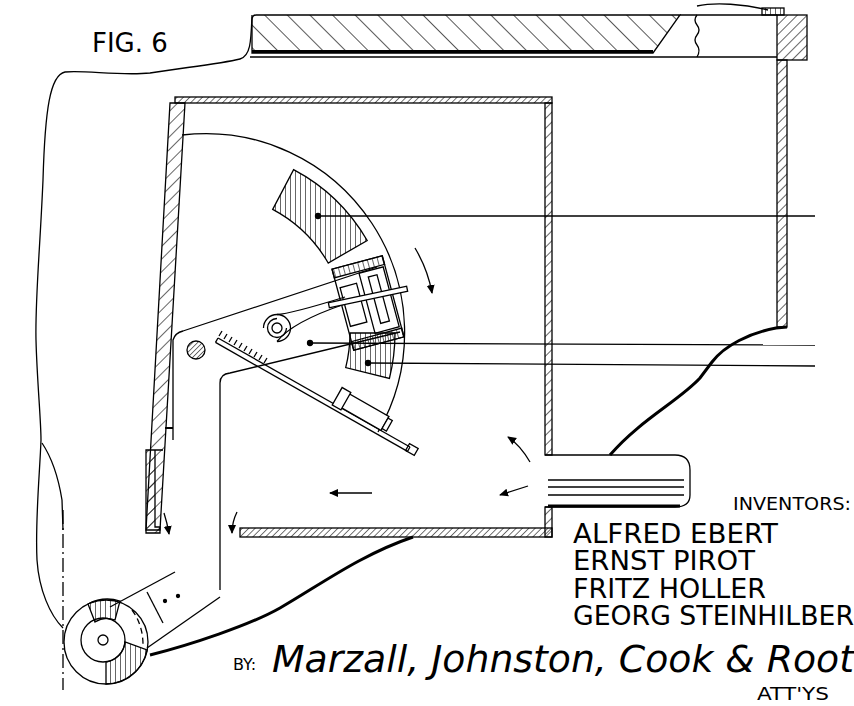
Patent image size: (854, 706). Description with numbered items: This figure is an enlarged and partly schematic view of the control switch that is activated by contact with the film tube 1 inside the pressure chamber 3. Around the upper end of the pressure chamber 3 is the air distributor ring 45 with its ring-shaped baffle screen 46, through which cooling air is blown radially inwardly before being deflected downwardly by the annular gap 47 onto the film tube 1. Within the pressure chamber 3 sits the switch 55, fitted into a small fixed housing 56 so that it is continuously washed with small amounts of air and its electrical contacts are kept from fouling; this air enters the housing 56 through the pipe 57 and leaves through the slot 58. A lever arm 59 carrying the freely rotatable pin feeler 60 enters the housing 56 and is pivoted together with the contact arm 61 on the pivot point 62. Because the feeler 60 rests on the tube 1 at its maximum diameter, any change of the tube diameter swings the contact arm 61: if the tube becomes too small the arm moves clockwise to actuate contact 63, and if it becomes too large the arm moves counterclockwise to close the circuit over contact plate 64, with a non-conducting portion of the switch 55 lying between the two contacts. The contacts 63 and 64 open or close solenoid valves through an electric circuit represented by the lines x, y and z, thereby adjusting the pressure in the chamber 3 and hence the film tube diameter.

The film tube 1 is at (55, 467).
The pressure chamber 3 is at (88, 198).
The air distributor ring 45 is at (739, 46).
The ring-shaped baffle screen 46 is at (697, 55).
The annular gap 47 is at (680, 44).
The switch 55 is at (266, 160).
The housing 56 is at (452, 537).
The pipe 57 is at (643, 462).
The slot 58 is at (232, 536).
The lever arm 59 is at (182, 477).
The pin feeler 60 is at (82, 607).
The contact arm 61 is at (293, 302).
The pivot point 62 is at (195, 341).
The electrical contact 63 is at (380, 352).
The electrical contact 64 is at (305, 200).
The line x is at (598, 366).
The line y is at (569, 346).
The line z is at (572, 216).